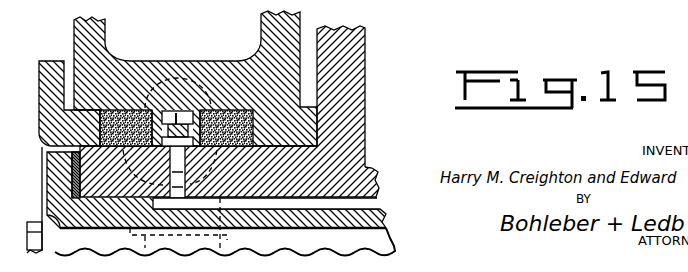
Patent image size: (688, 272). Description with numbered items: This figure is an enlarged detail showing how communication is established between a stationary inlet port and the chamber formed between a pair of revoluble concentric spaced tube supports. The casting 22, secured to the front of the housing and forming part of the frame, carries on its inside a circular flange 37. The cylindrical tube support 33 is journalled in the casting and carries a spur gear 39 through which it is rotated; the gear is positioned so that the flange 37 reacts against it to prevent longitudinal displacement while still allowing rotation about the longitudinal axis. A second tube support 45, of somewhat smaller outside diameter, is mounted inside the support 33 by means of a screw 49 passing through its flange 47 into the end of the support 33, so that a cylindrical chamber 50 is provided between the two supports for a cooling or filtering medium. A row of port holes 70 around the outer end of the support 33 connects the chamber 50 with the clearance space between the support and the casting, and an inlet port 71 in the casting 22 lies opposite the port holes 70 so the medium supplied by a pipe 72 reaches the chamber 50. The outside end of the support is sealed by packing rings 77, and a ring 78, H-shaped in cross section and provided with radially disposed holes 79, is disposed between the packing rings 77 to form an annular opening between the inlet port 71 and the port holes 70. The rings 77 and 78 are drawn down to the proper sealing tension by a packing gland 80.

The casting 22 is at (97, 38).
The tube support 33 is at (377, 182).
The circular flange 37 is at (310, 127).
The spur gear 39 is at (355, 60).
The tube support 45 is at (390, 229).
The flange 47 is at (57, 180).
The screw 49 is at (31, 222).
The cylindrical chamber 50 is at (372, 200).
The port hole 70 is at (133, 192).
The inlet port 71 is at (202, 110).
The pipe 72 is at (220, 248).
The packing ring 77 is at (115, 118).
The ring 78 is at (157, 108).
The radially disposed hole 79 is at (175, 112).
The packing gland 80 is at (42, 102).